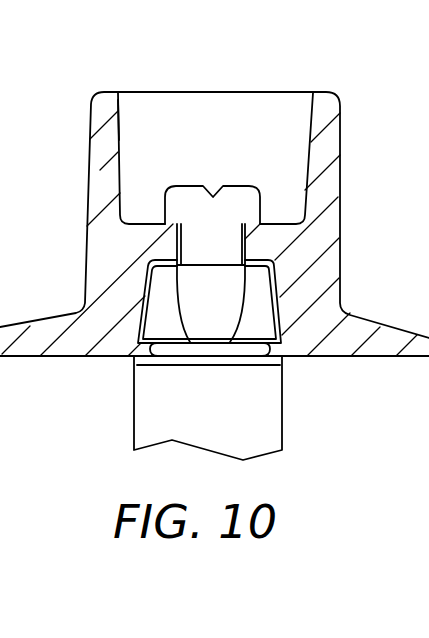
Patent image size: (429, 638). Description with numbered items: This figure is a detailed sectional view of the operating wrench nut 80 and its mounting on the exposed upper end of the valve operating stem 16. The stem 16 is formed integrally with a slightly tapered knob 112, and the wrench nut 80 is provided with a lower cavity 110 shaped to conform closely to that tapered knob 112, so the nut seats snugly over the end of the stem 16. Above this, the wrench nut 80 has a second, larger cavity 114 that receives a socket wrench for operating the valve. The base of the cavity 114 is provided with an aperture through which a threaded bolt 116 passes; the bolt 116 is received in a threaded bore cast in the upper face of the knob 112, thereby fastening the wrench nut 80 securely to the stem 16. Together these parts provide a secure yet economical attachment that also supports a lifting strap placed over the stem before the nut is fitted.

The stem 16 is at (265, 400).
The wrench nut 80 is at (88, 163).
The cavity 110 is at (140, 292).
The tapered knob 112 is at (262, 285).
The cavity 114 is at (120, 127).
The threaded bolt 116 is at (240, 183).